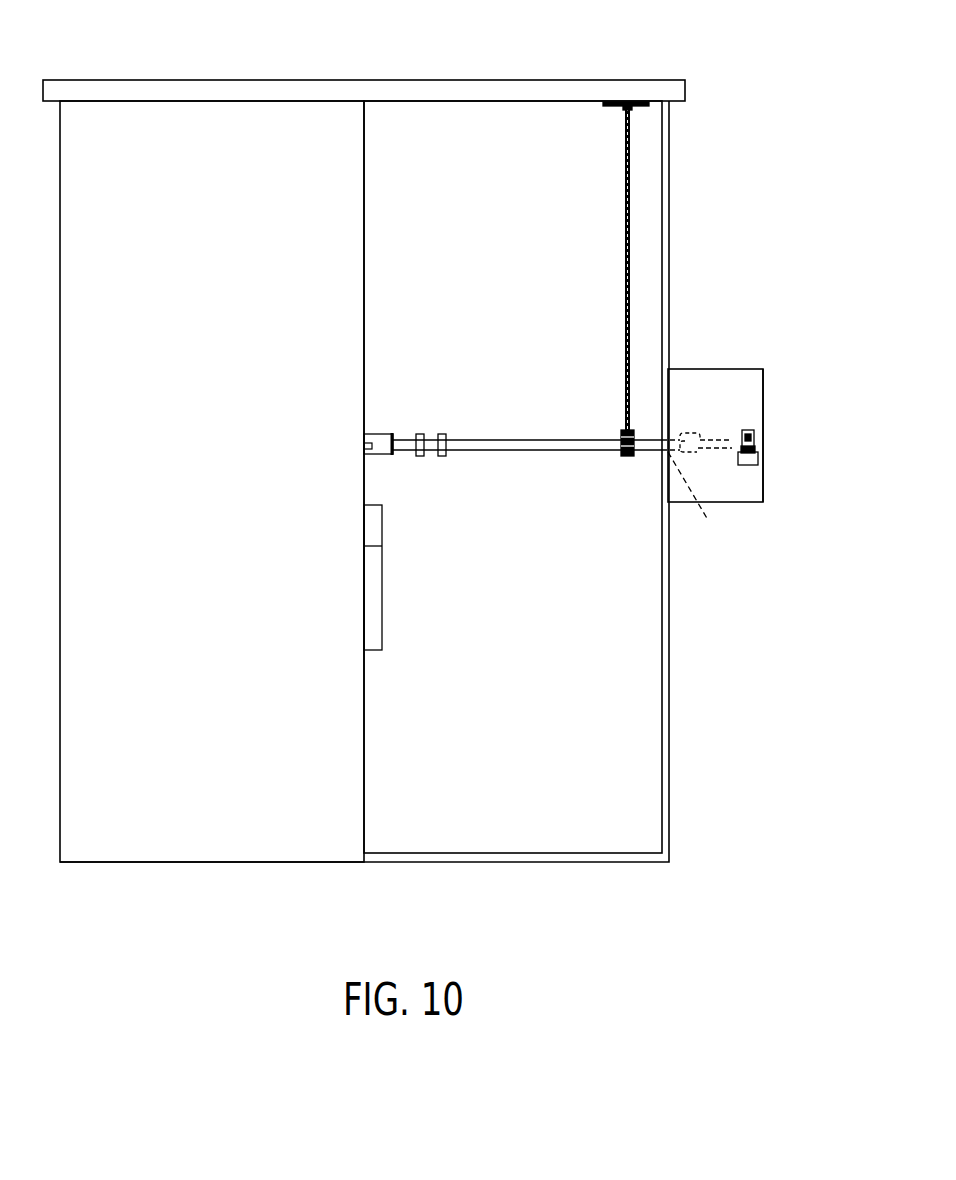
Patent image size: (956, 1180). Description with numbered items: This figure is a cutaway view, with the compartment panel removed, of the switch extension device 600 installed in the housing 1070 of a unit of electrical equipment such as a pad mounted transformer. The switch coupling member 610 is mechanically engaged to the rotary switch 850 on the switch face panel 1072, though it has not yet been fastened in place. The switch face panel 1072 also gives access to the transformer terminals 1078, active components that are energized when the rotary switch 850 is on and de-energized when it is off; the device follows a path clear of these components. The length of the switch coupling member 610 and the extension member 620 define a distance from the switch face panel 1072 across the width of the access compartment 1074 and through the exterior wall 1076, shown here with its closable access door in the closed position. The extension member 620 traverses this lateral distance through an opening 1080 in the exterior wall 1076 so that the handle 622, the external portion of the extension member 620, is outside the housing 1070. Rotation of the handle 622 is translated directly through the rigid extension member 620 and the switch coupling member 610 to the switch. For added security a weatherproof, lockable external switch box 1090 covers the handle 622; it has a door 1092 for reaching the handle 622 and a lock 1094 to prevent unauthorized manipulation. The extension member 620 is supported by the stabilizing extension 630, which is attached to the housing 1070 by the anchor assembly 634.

The housing 1070 is at (427, 88).
The switch face panel 1072 is at (364, 243).
The access compartment 1074 is at (507, 130).
The exterior wall 1076 is at (670, 119).
The transformer terminals 1078 is at (372, 650).
The switch extension device 600 is at (527, 308).
The switch coupling member 610 is at (378, 436).
The extension member 620 is at (580, 453).
The handle 622 is at (716, 440).
The stabilizing extension 630 is at (625, 245).
The anchor assembly 634 is at (612, 106).
The rotary switch 850 is at (372, 447).
The opening 1080 is at (697, 501).
The external switch box 1090 is at (717, 368).
The door 1092 is at (764, 408).
The lock 1094 is at (758, 458).